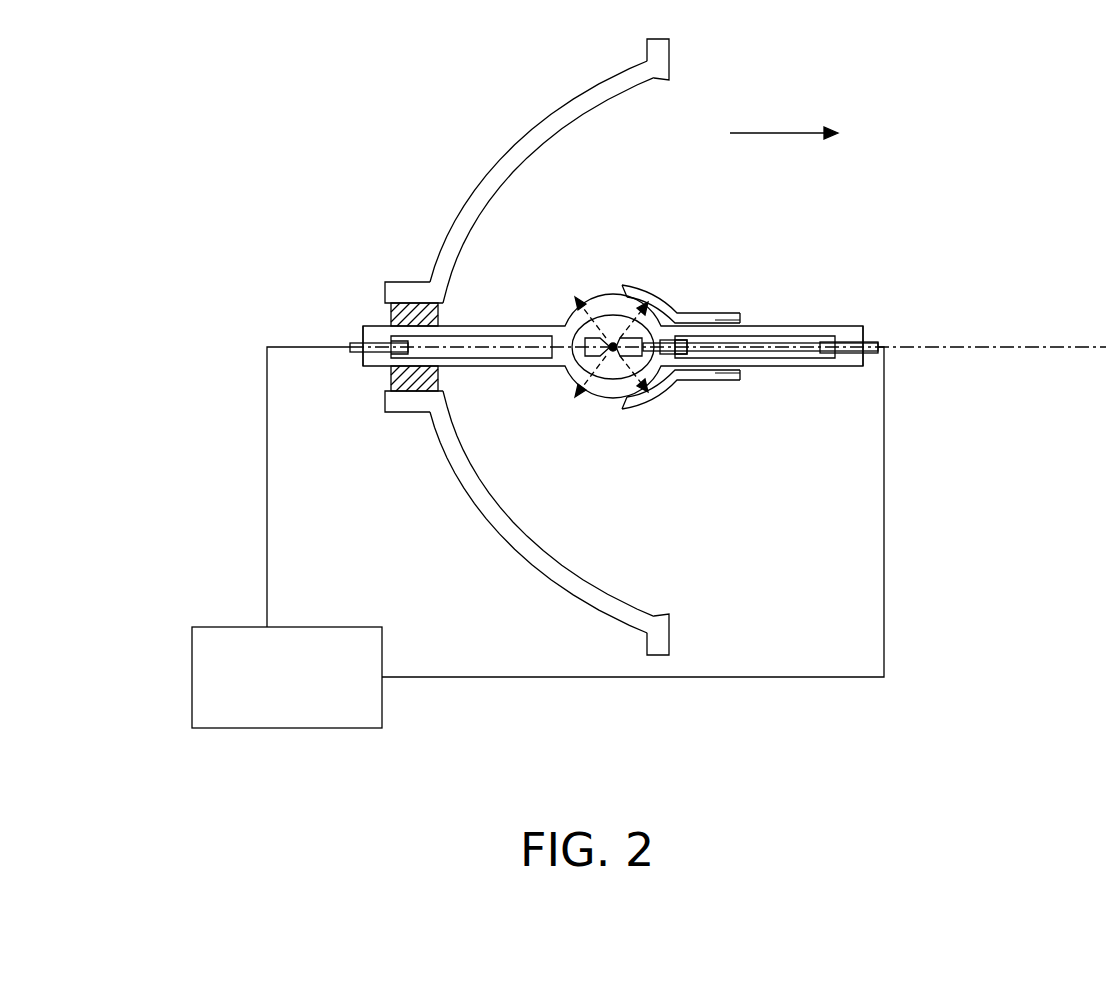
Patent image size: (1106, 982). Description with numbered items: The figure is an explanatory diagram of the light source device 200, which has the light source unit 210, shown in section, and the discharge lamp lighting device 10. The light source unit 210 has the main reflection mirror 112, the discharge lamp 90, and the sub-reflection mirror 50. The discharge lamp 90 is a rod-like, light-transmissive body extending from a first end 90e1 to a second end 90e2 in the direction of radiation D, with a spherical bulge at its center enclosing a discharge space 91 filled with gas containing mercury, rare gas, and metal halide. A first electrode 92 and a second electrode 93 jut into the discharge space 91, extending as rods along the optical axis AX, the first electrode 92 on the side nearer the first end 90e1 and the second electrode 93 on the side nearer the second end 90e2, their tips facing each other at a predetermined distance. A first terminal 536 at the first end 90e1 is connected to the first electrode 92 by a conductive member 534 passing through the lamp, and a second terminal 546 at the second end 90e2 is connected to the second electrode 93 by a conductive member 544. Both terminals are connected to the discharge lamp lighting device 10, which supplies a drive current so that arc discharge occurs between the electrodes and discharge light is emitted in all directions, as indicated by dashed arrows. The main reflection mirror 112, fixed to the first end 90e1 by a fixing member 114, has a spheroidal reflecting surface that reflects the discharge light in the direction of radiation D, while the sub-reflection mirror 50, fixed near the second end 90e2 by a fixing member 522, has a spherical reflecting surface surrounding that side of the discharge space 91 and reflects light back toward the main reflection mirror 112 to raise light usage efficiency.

The light source device 200 is at (1000, 73).
The light source unit 210 is at (507, 347).
The main reflection mirror 112 is at (521, 141).
The fixing member 114 is at (392, 306).
The discharge lamp 90 is at (610, 349).
The first end 90e1 is at (363, 326).
The second end 90e2 is at (836, 326).
The discharge space 91 is at (608, 368).
The first electrode 92 is at (576, 372).
The second electrode 93 is at (664, 380).
The sub-reflection mirror 50 is at (640, 288).
The fixing member 522 is at (753, 325).
The conductive member 534 is at (488, 360).
The first terminal 536 is at (358, 352).
The conductive member 544 is at (770, 358).
The second terminal 546 is at (872, 353).
The discharge lamp lighting device 10 is at (320, 627).
The optical axis AX is at (1005, 345).
The direction of radiation D is at (795, 134).